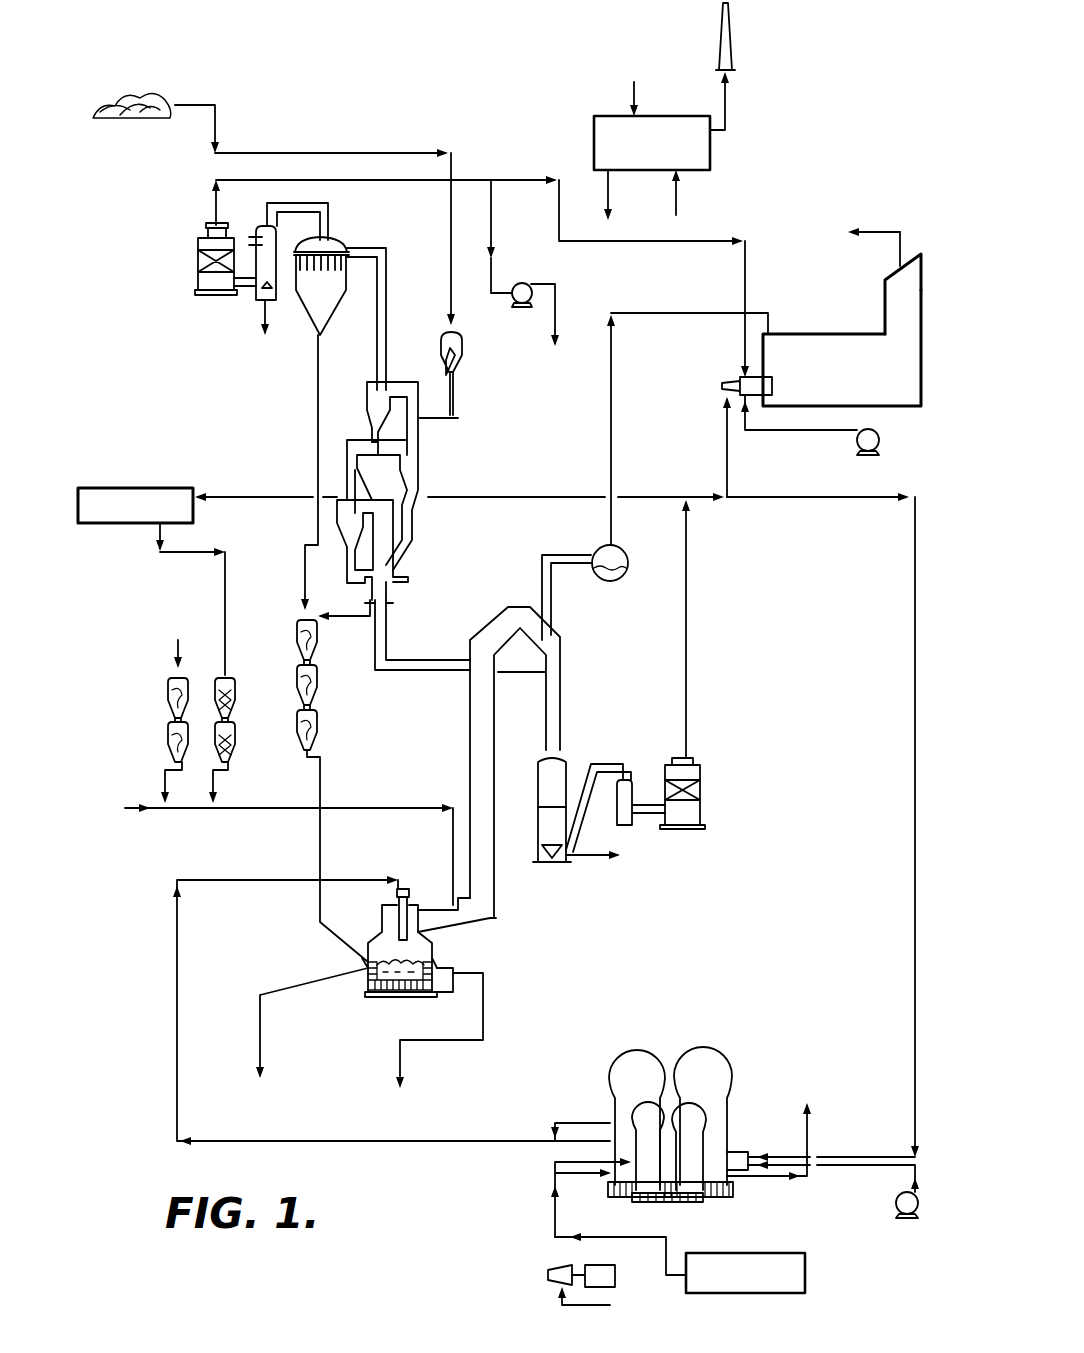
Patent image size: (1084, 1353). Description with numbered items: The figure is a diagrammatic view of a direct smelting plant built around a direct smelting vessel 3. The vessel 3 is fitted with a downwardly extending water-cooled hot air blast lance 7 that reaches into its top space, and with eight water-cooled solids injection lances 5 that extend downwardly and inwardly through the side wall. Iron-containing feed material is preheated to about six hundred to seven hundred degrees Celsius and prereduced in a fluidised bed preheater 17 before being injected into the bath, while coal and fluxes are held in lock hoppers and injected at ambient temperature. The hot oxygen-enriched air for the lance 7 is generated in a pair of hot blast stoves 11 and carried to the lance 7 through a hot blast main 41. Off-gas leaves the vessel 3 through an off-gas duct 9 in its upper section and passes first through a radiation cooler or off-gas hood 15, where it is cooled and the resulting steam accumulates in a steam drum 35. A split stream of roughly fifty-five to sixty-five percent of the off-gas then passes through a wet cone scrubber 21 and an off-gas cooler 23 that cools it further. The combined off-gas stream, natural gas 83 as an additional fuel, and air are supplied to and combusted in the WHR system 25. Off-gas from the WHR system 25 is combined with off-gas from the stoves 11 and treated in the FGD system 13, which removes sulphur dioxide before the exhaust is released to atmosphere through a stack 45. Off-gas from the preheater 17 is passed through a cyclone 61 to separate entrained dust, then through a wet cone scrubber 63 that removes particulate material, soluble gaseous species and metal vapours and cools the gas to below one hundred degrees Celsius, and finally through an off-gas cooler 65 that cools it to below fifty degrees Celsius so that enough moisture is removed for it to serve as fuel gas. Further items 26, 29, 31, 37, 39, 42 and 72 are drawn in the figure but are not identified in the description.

The direct smelting vessel 3 is at (375, 1010).
The solids injection lances 5 is at (364, 960).
The hot air blast lance 7 is at (397, 910).
The off-gas duct 9 is at (431, 917).
The hot blast stoves 11 is at (745, 1056).
The FGD system 13 is at (621, 132).
The off-gas hood 15 is at (494, 634).
The fluidised bed preheater 17 is at (320, 540).
The wet cone scrubber 21 is at (529, 825).
The off-gas cooler 23 is at (711, 789).
The WHR system 25 is at (803, 327).
The lock hopper feeders 26 is at (158, 715).
The oxygen plant 29 is at (787, 1276).
The nozzle 31 is at (542, 1275).
The steam drum 35 is at (607, 582).
The gas valve 37 is at (736, 376).
The gas holder chimney 39 is at (857, 367).
The hot blast main 41 is at (178, 998).
The blower 42 is at (855, 447).
The stack 45 is at (742, 49).
The cyclone 61 is at (334, 236).
The wet cone scrubber 63 is at (256, 226).
The off-gas cooler 65 is at (200, 258).
The ore storage 72 is at (113, 510).
The natural gas 83 is at (521, 178).